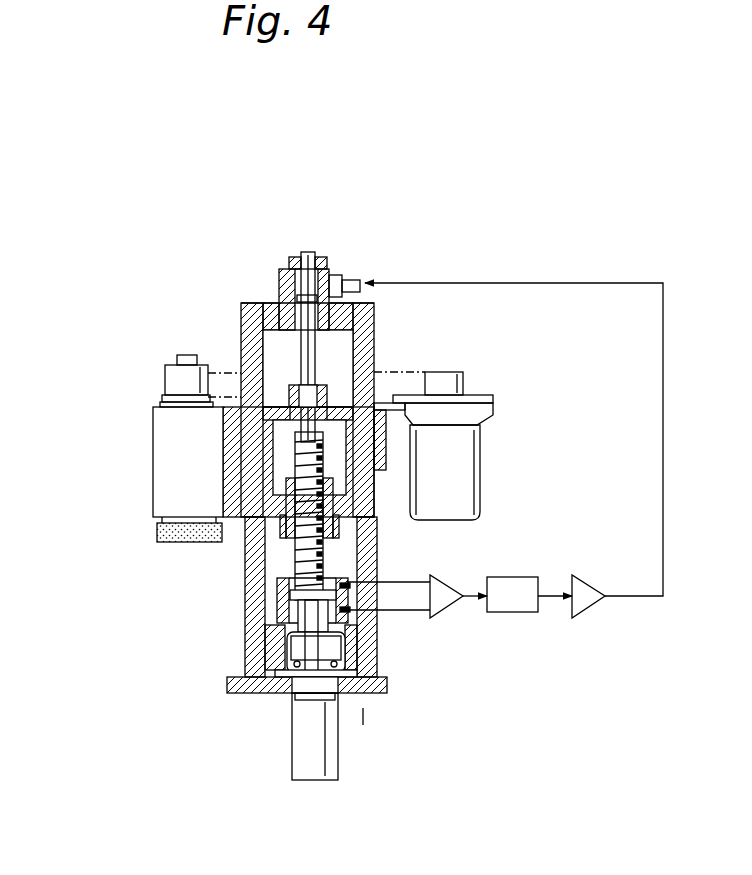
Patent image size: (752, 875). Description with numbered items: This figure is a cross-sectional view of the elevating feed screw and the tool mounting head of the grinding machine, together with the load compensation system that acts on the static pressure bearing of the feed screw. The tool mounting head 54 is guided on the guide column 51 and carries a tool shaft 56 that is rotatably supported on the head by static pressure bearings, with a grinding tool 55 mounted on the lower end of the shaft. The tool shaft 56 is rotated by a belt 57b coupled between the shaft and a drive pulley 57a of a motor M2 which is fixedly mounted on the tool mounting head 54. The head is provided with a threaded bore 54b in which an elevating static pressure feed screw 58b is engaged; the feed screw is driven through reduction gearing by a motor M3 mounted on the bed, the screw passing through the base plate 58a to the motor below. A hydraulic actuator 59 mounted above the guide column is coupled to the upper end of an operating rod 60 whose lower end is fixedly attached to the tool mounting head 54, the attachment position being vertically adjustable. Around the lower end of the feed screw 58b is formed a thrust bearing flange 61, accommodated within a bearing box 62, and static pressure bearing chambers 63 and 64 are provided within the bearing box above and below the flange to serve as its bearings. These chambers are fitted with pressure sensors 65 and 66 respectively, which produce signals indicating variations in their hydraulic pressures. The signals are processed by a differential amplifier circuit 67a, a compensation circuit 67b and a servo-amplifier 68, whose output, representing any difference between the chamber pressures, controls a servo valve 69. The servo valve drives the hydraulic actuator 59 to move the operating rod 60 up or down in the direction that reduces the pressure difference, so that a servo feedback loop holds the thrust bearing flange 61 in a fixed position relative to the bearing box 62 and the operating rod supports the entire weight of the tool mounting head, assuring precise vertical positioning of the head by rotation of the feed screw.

The guide column 51 is at (374, 335).
The tool mounting head 54 is at (232, 407).
The threaded bore 54b is at (290, 490).
The grinding tool 55 is at (195, 542).
The tool shaft 56 is at (185, 356).
The drive pulley 57a is at (465, 383).
The belt 57b is at (415, 372).
The base plate 58a is at (390, 690).
The elevating static pressure feed screw 58b is at (325, 450).
The hydraulic actuator 59 is at (278, 270).
The operating rod 60 is at (312, 252).
The thrust bearing flange 61 is at (290, 595).
The bearing box 62 is at (288, 608).
The static pressure bearing chamber 63 is at (345, 582).
The static pressure bearing chamber 64 is at (365, 652).
The pressure sensor 65 is at (378, 593).
The pressure sensor 66 is at (378, 622).
The differential amplifier circuit 67a is at (450, 590).
The compensation circuit 67b is at (510, 612).
The servo-amplifier 68 is at (590, 612).
The servo valve 69 is at (348, 273).
The motor M2 is at (480, 452).
The motor M3 is at (305, 746).